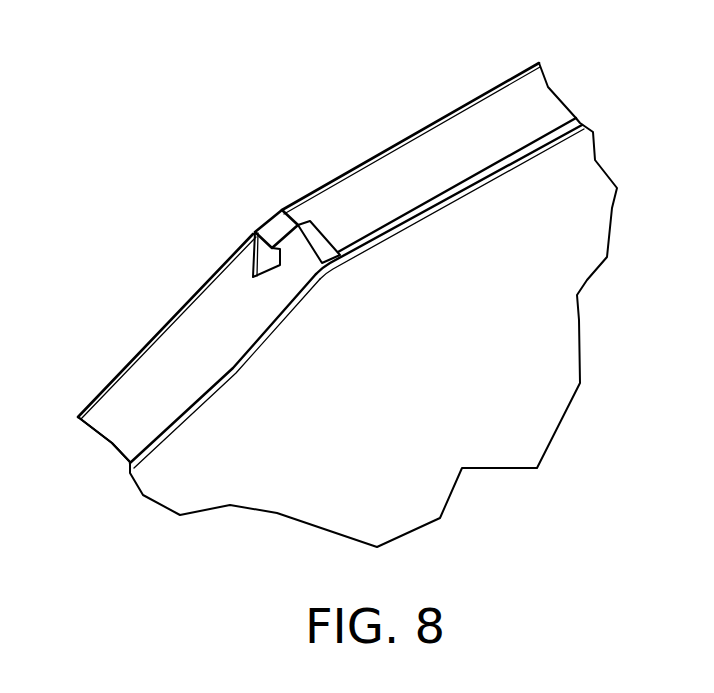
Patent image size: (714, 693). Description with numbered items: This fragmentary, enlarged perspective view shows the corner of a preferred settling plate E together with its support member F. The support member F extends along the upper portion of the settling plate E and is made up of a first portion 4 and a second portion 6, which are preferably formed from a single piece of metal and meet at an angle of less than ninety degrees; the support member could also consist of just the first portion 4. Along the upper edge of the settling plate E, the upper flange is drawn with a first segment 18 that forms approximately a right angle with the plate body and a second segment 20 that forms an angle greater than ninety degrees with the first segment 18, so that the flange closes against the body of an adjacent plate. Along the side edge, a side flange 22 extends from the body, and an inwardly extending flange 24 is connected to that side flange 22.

The first segment 18 is at (480, 118).
The second segment 20 is at (472, 192).
The side flange 22 is at (162, 357).
The inwardly extending flange 24 is at (233, 370).
The second portion 6 is at (286, 245).
The first portion 4 is at (272, 258).
The settling plate E is at (378, 126).
The support member F is at (232, 232).